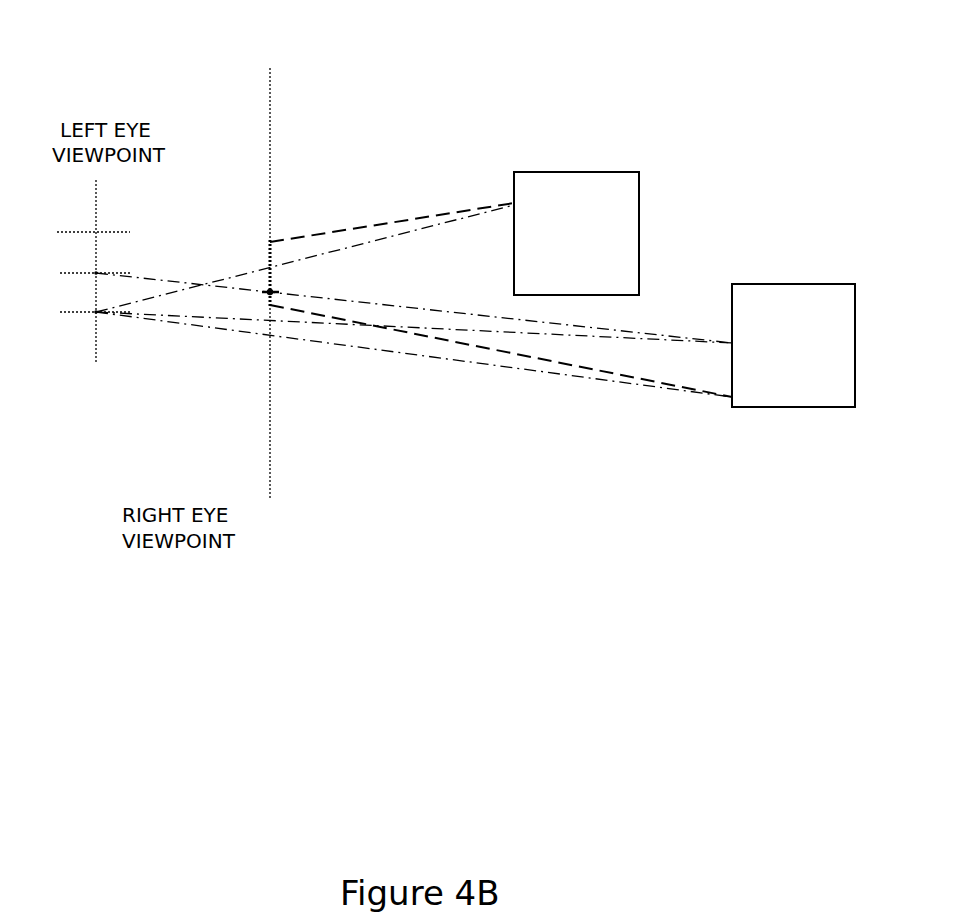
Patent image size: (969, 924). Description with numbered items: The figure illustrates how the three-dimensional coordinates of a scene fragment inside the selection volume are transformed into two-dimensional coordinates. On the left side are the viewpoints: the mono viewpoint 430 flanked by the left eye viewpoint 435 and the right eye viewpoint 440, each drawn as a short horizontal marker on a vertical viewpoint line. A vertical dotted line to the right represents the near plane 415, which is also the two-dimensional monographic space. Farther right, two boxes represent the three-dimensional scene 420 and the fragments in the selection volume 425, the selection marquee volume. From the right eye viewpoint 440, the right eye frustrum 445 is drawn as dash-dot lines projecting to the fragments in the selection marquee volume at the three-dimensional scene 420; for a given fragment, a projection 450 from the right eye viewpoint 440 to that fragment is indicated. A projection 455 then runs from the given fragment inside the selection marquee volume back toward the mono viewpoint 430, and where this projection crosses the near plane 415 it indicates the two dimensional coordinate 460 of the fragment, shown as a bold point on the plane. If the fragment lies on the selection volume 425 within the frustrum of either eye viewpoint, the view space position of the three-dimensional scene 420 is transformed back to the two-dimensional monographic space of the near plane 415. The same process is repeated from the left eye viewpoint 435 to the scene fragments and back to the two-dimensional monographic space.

The near plane 415 is at (319, 262).
The three-dimensional scene 420 is at (748, 284).
The selection volume 425 is at (305, 310).
The mono viewpoint 430 is at (127, 239).
The left eye viewpoint 435 is at (125, 194).
The right eye viewpoint 440 is at (159, 409).
The right eye frustrum 445 is at (217, 282).
The projection 450 is at (414, 393).
The projection 455 is at (414, 391).
The two dimensional coordinate 460 is at (331, 342).